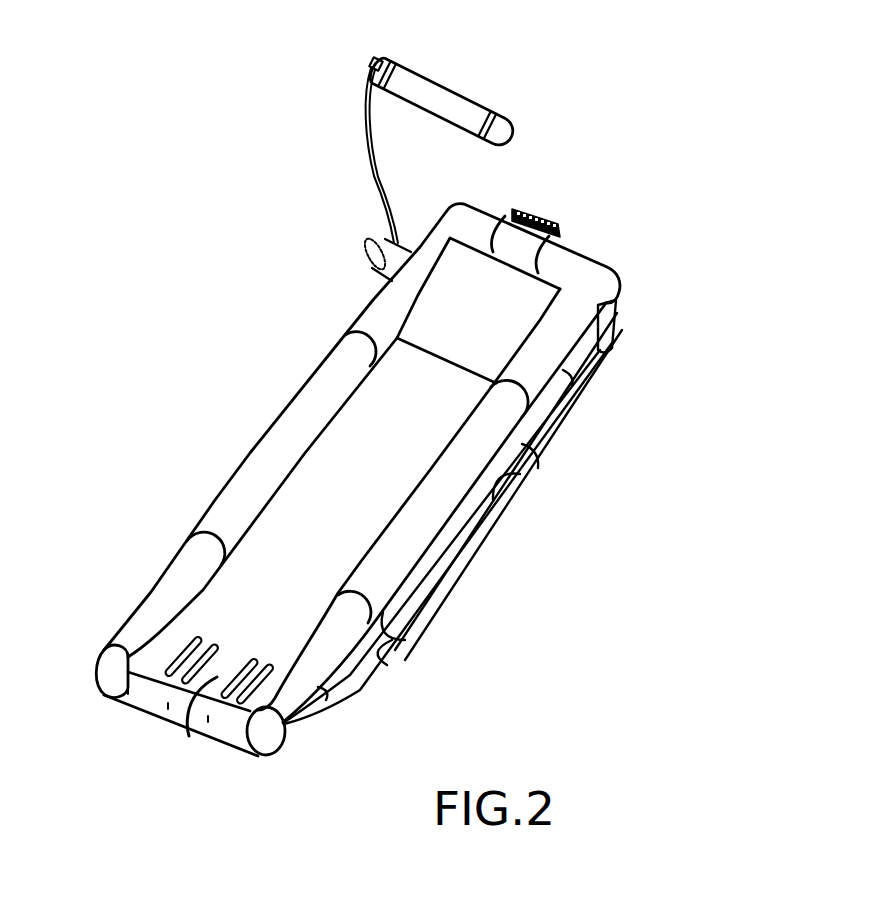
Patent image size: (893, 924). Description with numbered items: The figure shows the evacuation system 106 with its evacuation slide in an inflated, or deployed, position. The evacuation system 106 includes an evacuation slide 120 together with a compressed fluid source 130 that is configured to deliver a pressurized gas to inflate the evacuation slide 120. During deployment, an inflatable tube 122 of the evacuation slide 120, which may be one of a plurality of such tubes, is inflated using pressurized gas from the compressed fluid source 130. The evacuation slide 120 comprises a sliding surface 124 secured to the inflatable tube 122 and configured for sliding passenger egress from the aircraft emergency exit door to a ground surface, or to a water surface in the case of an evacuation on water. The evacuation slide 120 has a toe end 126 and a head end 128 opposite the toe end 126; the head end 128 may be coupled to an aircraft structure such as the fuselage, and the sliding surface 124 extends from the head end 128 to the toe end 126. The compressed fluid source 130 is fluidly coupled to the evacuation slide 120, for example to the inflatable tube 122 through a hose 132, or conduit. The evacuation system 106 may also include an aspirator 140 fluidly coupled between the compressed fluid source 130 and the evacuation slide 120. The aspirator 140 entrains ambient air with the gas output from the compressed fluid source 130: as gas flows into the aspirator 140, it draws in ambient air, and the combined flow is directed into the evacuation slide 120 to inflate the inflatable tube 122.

The evacuation system 106 is at (625, 99).
The evacuation slide 120 is at (585, 245).
The inflatable tube 122 is at (293, 437).
The sliding surface 124 is at (371, 482).
The toe end 126 is at (150, 707).
The head end 128 is at (503, 214).
The compressed fluid source 130 is at (455, 104).
The hose 132 is at (377, 184).
The aspirator 140 is at (372, 266).